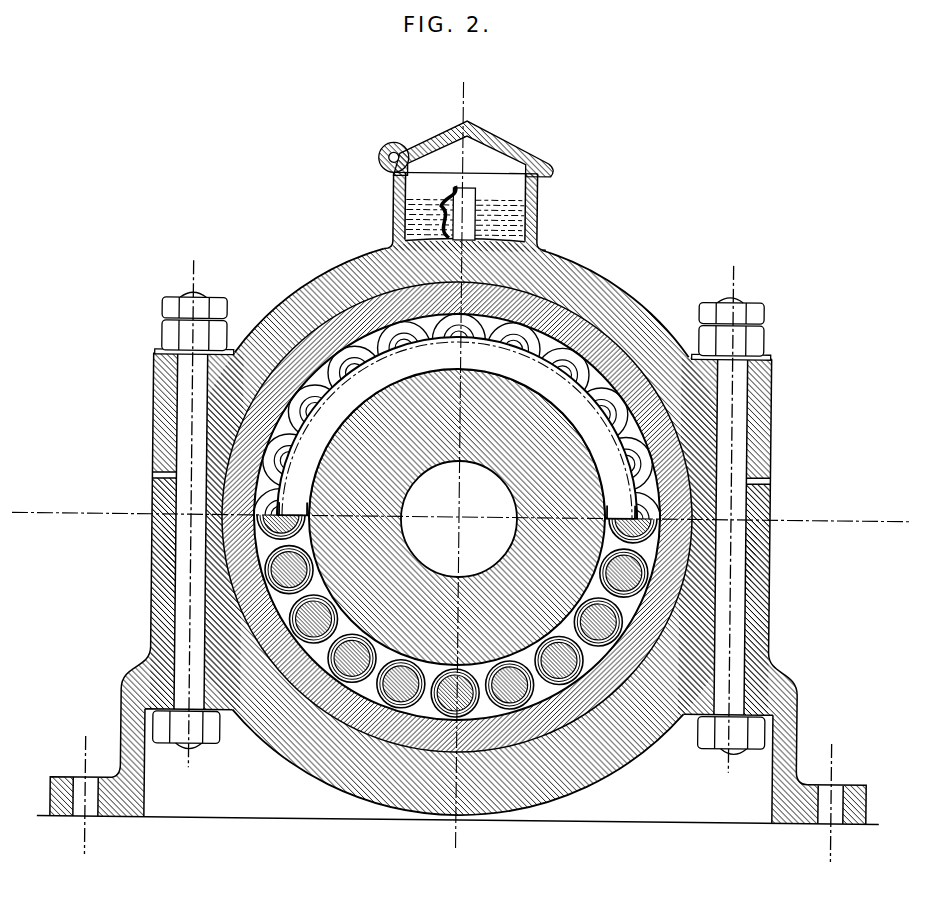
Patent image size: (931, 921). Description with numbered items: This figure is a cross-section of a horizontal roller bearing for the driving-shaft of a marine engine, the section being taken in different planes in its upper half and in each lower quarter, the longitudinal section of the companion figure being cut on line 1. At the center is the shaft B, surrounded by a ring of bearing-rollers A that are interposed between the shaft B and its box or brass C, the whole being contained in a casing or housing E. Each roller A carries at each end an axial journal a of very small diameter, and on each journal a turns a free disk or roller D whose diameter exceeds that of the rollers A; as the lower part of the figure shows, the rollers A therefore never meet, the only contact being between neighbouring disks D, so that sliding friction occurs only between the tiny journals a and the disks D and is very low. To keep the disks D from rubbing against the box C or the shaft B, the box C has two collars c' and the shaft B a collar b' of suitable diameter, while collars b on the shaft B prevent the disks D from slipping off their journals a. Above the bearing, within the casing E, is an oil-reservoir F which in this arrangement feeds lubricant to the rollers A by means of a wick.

The section line 1 is at (462, 464).
The bearing-rollers A is at (294, 589).
The shaft B is at (477, 578).
The box or brass C is at (601, 331).
The disk or roller D is at (504, 331).
The casing or housing E is at (592, 268).
The oil-reservoir F is at (466, 186).
The axial journal a is at (401, 341).
The collar b is at (458, 427).
The collar b' is at (299, 499).
The collars c' is at (635, 499).